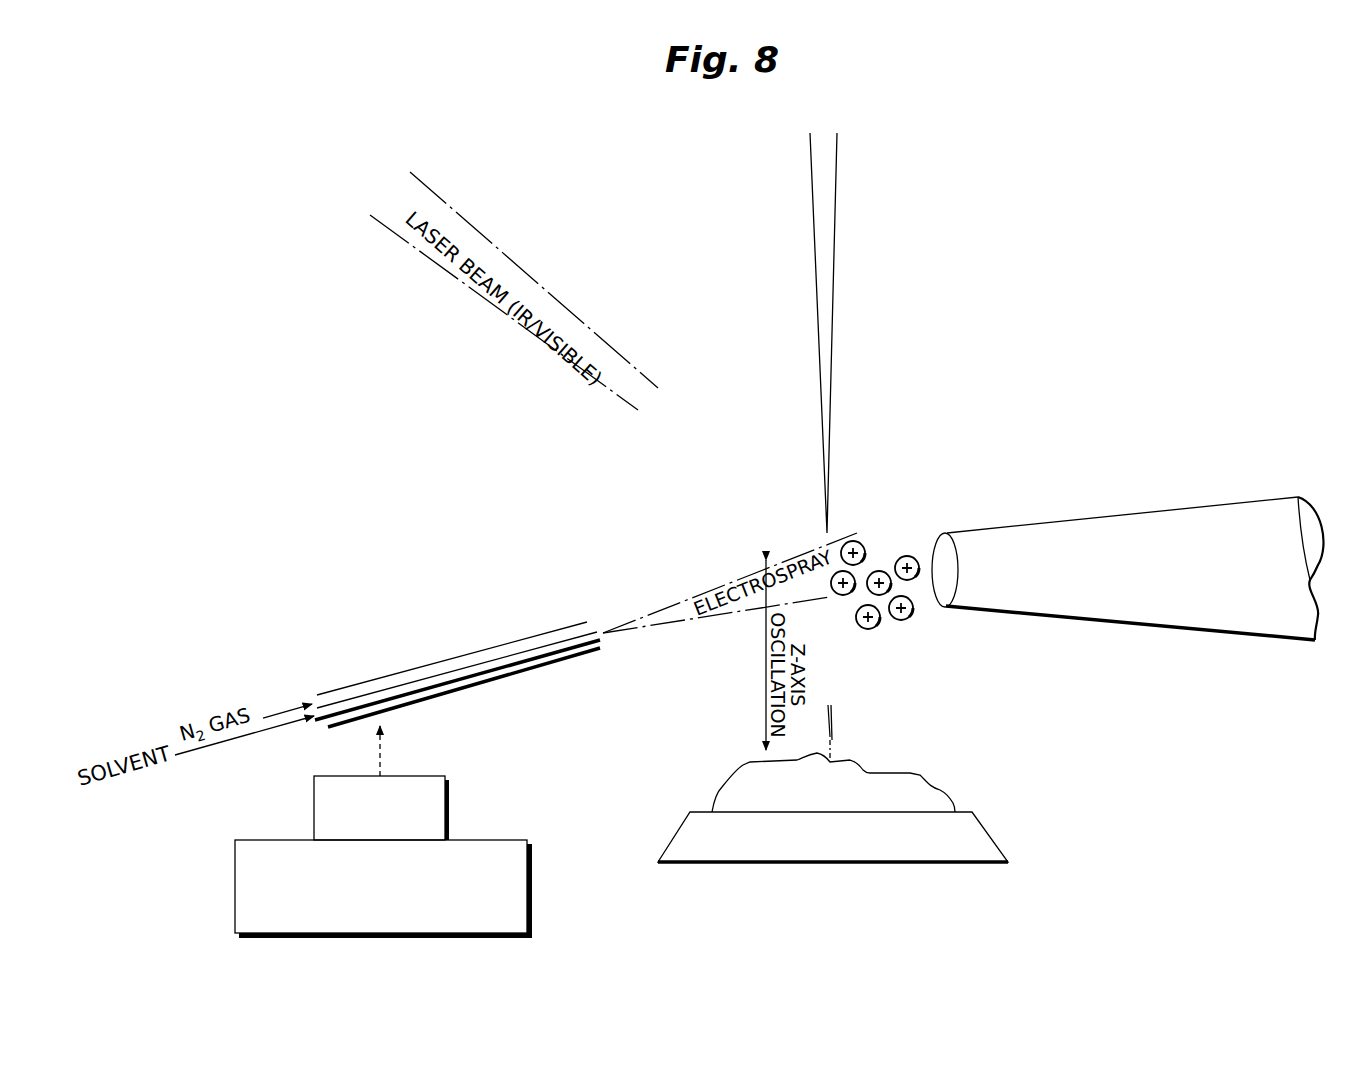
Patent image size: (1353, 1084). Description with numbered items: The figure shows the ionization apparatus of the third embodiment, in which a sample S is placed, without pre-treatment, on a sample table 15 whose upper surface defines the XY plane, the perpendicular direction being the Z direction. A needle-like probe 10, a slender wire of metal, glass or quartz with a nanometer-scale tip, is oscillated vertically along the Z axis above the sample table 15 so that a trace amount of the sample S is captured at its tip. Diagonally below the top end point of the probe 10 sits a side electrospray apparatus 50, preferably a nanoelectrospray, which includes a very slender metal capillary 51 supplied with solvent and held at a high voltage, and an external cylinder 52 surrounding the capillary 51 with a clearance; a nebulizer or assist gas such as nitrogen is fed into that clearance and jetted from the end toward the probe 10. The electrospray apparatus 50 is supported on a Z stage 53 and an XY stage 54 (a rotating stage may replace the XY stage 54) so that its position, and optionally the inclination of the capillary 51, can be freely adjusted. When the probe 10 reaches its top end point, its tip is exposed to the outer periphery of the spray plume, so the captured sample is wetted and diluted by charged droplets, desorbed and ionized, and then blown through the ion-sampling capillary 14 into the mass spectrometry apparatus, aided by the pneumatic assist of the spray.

The probe 10 is at (835, 257).
The ion-sampling capillary 14 is at (1175, 630).
The sample table 15 is at (997, 842).
The electrospray apparatus 50 is at (502, 630).
The capillary 51 is at (595, 628).
The external cylinder 52 is at (568, 662).
The Z stage 53 is at (450, 815).
The XY stage 54 is at (530, 898).
The sample S is at (922, 772).